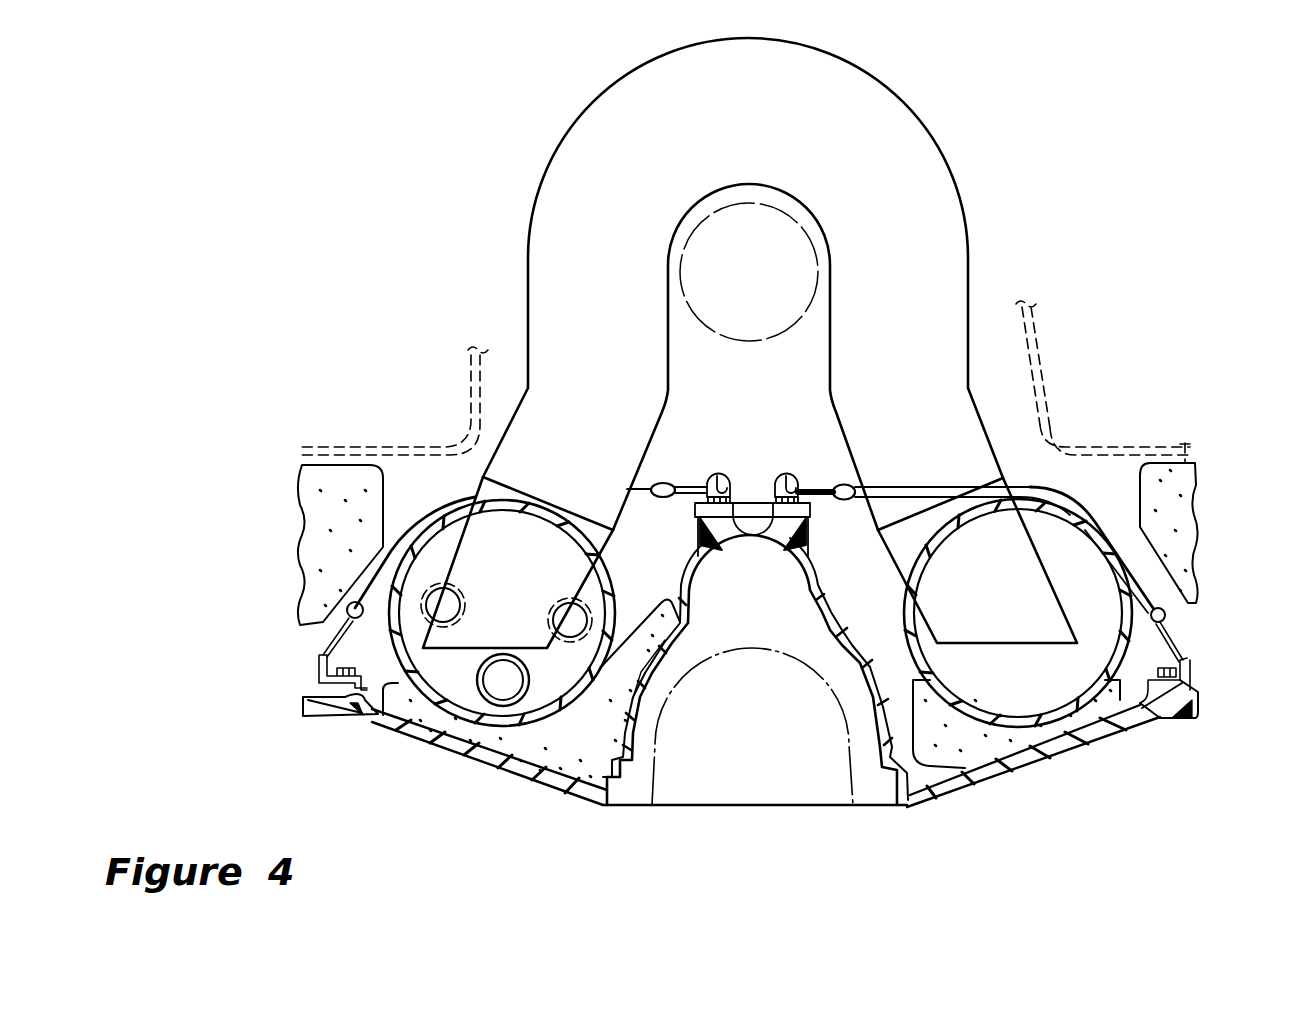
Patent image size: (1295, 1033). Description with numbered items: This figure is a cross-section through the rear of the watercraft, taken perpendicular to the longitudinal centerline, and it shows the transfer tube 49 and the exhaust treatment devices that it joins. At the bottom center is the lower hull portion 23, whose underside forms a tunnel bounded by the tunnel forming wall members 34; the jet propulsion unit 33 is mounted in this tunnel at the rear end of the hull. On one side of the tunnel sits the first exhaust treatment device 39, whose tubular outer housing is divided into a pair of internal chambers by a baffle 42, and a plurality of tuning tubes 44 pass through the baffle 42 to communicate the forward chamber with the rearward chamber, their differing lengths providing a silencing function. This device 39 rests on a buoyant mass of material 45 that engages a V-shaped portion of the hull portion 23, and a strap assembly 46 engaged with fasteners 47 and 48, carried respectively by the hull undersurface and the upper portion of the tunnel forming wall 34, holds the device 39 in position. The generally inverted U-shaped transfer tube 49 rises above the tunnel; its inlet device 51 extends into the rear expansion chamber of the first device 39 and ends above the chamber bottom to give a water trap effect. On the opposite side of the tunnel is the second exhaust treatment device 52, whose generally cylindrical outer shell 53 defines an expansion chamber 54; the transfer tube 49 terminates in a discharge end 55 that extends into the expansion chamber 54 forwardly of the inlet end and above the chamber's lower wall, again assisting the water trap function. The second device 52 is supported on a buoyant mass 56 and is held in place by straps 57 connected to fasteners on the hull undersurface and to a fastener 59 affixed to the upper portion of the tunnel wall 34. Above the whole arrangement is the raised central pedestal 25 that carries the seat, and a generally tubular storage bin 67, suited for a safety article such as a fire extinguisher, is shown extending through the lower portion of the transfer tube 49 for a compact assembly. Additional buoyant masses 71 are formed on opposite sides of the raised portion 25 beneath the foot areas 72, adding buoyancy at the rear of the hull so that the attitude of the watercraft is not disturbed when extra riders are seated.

The lower hull portion 23 is at (1052, 755).
The raised central pedestal 25 is at (1036, 347).
The jet propulsion unit 33 is at (663, 718).
The tunnel forming wall members 34 is at (843, 630).
The first exhaust treatment device 39 is at (616, 580).
The baffle 42 is at (447, 688).
The tuning tubes 44 is at (418, 623).
The buoyant mass of material 45 is at (567, 758).
The strap assembly 46 is at (433, 508).
The fastener 47 is at (318, 669).
The fastener 48 is at (713, 470).
The transfer tube 49 is at (930, 126).
The inlet device 51 is at (470, 488).
The second exhaust treatment device 52 is at (1070, 501).
The outer shell 53 is at (1198, 672).
The expansion chamber 54 is at (1110, 630).
The discharge end 55 is at (1062, 604).
The buoyant mass 56 is at (970, 745).
The straps 57 is at (905, 485).
The fastener 59 is at (790, 472).
The tubular storage bin 67 is at (814, 293).
The additional buoyant masses 71 is at (328, 549).
The foot areas 72 is at (330, 445).